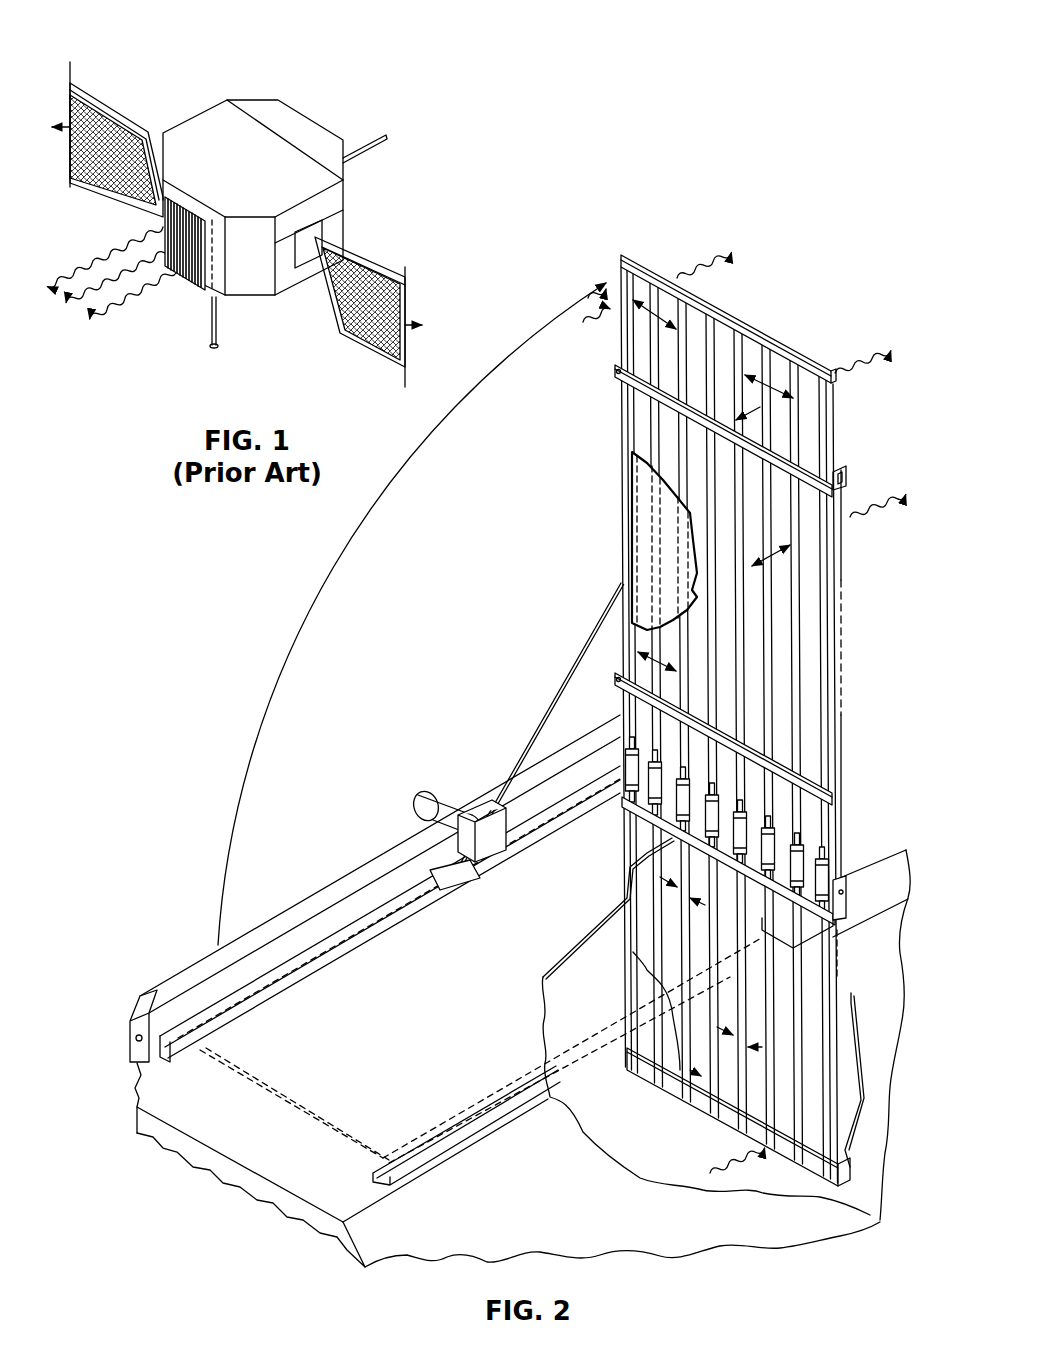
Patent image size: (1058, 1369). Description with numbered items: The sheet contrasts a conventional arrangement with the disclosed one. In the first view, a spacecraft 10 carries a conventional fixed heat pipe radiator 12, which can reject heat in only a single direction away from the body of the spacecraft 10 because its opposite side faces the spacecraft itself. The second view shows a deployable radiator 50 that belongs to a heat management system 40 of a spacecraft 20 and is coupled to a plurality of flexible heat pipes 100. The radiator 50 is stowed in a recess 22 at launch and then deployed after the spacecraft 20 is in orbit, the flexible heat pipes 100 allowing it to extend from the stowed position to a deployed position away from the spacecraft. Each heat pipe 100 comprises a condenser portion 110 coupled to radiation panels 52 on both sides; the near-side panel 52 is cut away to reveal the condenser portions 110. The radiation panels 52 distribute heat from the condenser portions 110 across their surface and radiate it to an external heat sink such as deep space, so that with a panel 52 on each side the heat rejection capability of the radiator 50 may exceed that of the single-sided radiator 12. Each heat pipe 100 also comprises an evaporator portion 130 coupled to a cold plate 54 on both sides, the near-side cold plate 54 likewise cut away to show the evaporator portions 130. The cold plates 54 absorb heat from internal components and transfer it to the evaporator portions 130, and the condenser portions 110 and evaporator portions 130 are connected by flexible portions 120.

In FIG. 1, the spacecraft 10 is at (130, 46).
In FIG. 1, the fixed heat pipe radiator 12 is at (207, 285).
In FIG. 2, the spacecraft 20 is at (190, 940).
In FIG. 2, the recess 22 is at (366, 990).
In FIG. 2, the heat management system 40 is at (540, 512).
In FIG. 2, the deployable radiator 50 is at (762, 694).
In FIG. 2, the radiation panel 52 is at (842, 453).
In FIG. 2, the cold plate 54 is at (646, 1084).
In FIG. 2, the heat pipes 100 is at (755, 597).
In FIG. 2, the condenser portion 110 is at (726, 322).
In FIG. 2, the flexible portion 120 is at (772, 848).
In FIG. 2, the evaporator portion 130 is at (683, 962).